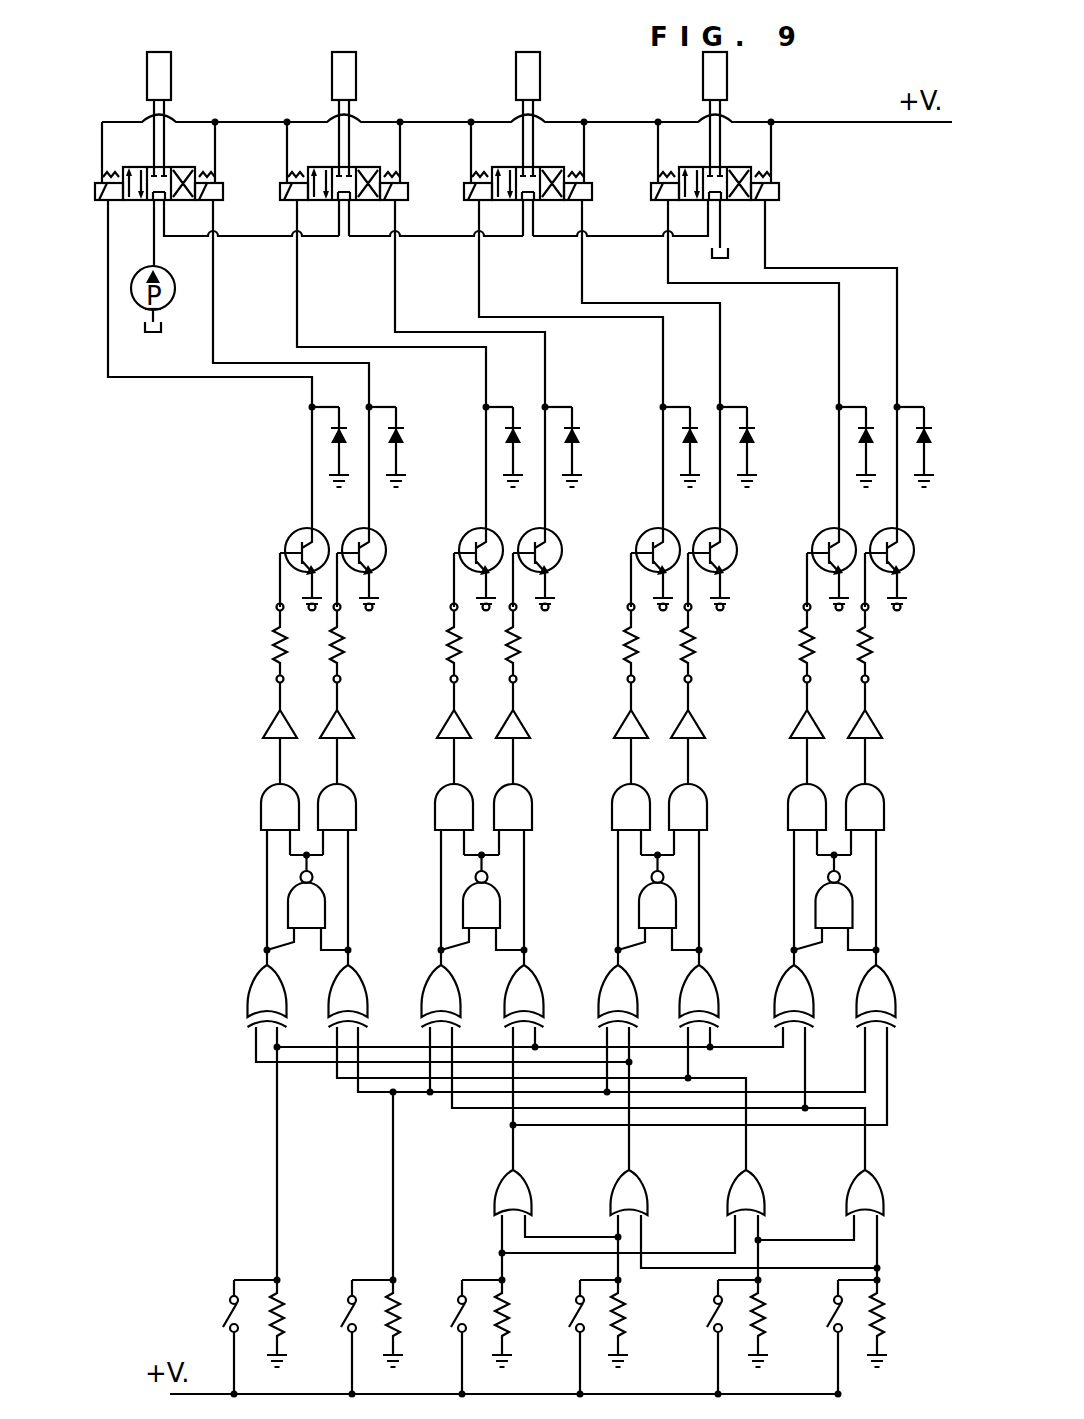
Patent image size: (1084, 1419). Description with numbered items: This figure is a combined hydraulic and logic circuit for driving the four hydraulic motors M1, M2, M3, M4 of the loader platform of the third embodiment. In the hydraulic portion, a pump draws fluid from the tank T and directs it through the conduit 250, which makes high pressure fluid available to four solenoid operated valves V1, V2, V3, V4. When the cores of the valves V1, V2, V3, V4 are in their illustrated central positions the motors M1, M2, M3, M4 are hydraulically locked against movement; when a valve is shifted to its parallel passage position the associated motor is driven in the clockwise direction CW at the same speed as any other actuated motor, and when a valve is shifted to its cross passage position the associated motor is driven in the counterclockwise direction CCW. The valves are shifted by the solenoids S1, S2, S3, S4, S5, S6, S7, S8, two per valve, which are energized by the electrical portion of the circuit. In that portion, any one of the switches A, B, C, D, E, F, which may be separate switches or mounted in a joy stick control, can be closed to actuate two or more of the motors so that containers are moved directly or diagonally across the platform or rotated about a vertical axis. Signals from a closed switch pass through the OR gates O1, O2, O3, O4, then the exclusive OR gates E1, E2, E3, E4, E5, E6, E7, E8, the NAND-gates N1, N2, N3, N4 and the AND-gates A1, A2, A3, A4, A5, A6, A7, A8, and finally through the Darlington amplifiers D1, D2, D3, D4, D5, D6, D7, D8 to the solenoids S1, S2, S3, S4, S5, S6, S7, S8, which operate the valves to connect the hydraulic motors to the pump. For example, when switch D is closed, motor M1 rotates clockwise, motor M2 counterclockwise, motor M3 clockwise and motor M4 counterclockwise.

The motor M1 is at (165, 73).
The motor M2 is at (721, 73).
The motor M3 is at (350, 73).
The motor M4 is at (534, 73).
The solenoid operated valve V1 is at (177, 166).
The solenoid operated valve V2 is at (362, 166).
The solenoid operated valve V3 is at (546, 166).
The solenoid operated valve V4 is at (733, 166).
The solenoid S1 is at (95, 203).
The solenoid S2 is at (217, 185).
The solenoid S3 is at (280, 195).
The solenoid S4 is at (402, 185).
The solenoid S5 is at (464, 195).
The solenoid S6 is at (586, 185).
The solenoid S7 is at (651, 200).
The solenoid S8 is at (779, 193).
The conduit 250 is at (312, 240).
The tank T is at (155, 340).
The clockwise rotation CW is at (188, 382).
The counterclockwise rotation CCW is at (213, 312).
The Darlington amplifier D1 is at (298, 528).
The Darlington amplifier D2 is at (383, 540).
The Darlington amplifier D3 is at (459, 548).
The Darlington amplifier D4 is at (552, 532).
The Darlington amplifier D5 is at (636, 550).
The Darlington amplifier D6 is at (727, 532).
The Darlington amplifier D7 is at (812, 550).
The Darlington amplifier D8 is at (904, 532).
The AND-gate A1 is at (262, 806).
The AND-gate A2 is at (343, 800).
The AND-gate A3 is at (446, 818).
The AND-gate A4 is at (519, 800).
The AND-gate A5 is at (622, 818).
The AND-gate A6 is at (694, 800).
The AND-gate A7 is at (798, 818).
The AND-gate A8 is at (871, 800).
The NAND-gate N1 is at (320, 902).
The NAND-gate N2 is at (495, 902).
The NAND-gate N3 is at (671, 902).
The NAND-gate N4 is at (848, 902).
The exclusive OR gate E1 is at (258, 985).
The exclusive OR gate E2 is at (353, 980).
The exclusive OR gate E3 is at (436, 1008).
The exclusive OR gate E4 is at (529, 980).
The exclusive OR gate E5 is at (612, 1008).
The exclusive OR gate E6 is at (703, 980).
The exclusive OR gate E7 is at (790, 1008).
The exclusive OR gate E8 is at (878, 980).
The OR gate O1 is at (500, 1188).
The OR gate O2 is at (618, 1188).
The OR gate O3 is at (733, 1188).
The OR gate O4 is at (853, 1188).
The switch A is at (228, 1310).
The switch B is at (345, 1310).
The switch C is at (455, 1312).
The switch D is at (573, 1310).
The switch E is at (710, 1310).
The switch F is at (830, 1310).